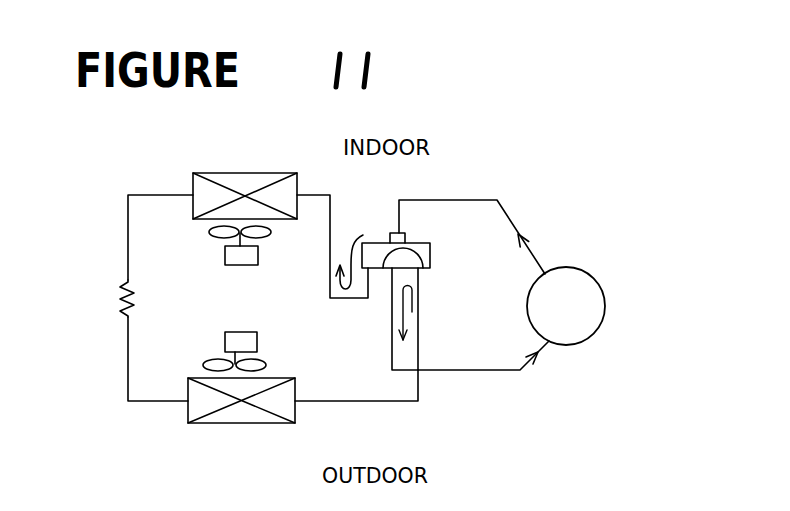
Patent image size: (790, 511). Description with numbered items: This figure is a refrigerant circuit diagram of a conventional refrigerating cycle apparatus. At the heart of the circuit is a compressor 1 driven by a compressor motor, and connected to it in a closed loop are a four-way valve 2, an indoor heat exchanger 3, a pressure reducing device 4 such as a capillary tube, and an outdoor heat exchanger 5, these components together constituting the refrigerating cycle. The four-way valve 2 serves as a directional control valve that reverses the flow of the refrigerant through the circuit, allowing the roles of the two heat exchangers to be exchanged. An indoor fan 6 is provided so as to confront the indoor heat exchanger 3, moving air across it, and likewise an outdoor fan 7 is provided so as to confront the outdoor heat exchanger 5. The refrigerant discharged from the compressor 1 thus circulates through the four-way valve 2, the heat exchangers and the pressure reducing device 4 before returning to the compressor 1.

The compressor 1 is at (605, 293).
The four-way valve 2 is at (432, 253).
The indoor heat exchanger 3 is at (268, 172).
The pressure reducing device 4 is at (121, 291).
The outdoor heat exchanger 5 is at (265, 423).
The indoor fan 6 is at (222, 258).
The outdoor fan 7 is at (259, 343).